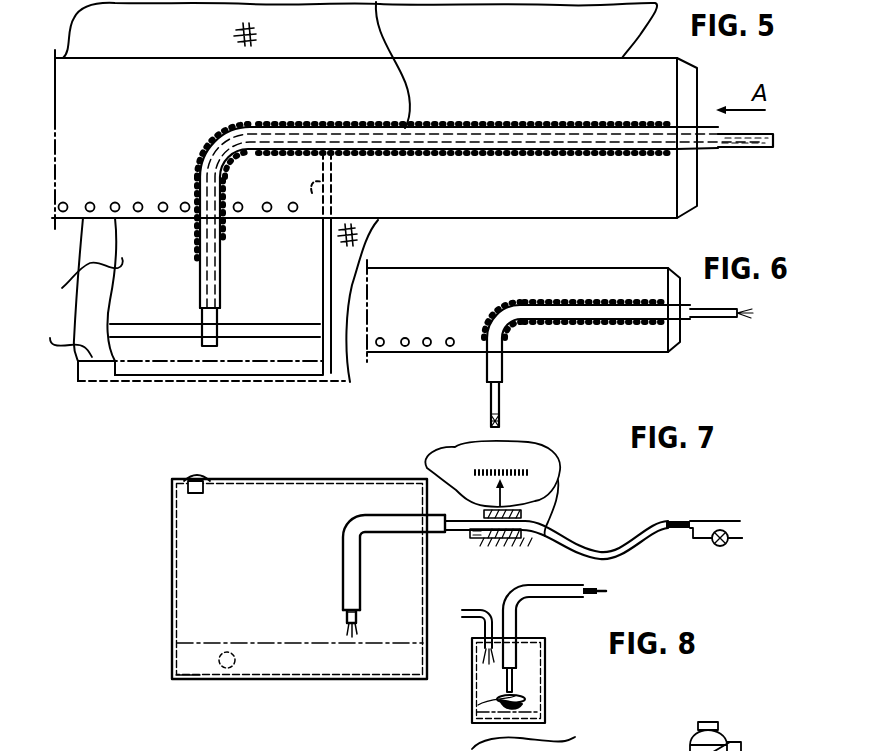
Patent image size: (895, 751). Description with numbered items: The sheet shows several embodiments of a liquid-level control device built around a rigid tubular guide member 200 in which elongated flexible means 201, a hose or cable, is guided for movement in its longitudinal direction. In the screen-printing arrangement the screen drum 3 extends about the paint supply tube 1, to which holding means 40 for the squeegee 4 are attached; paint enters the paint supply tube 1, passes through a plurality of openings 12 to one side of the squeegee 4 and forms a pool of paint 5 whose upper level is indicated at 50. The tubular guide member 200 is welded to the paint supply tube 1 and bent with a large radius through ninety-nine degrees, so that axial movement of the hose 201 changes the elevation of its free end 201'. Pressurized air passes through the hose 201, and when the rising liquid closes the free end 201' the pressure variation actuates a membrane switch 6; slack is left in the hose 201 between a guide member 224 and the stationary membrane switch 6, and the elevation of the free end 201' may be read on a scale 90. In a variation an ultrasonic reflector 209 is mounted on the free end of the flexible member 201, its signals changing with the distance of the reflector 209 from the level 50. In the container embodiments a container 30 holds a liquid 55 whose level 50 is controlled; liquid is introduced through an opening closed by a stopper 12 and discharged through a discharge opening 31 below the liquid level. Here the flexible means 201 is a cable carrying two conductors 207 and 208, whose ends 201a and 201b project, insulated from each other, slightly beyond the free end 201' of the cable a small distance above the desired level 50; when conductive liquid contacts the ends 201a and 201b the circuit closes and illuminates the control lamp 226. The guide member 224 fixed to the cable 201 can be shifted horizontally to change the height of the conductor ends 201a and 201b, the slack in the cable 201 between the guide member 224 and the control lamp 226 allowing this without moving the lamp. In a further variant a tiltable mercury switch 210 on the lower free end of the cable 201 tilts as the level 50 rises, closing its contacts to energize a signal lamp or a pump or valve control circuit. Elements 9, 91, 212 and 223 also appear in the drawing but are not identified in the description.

In FIG. 6, the paint supply tube 1 is at (557, 279).
In FIG. 5, the screen drum 3 is at (128, 381).
In FIG. 5, the squeegee 4 is at (160, 349).
In FIG. 5, the pool of paint 5 is at (88, 372).
In FIG. 8, the membrane switch 6 is at (593, 746).
In FIG. 7, the spray plume 9 is at (556, 463).
In FIG. 5, the openings 12 is at (63, 218).
In FIG. 6, the openings 12 is at (407, 346).
In FIG. 7, the container 30 is at (172, 583).
In FIG. 8, the container 30 is at (548, 649).
In FIG. 7, the discharge opening 31 is at (228, 680).
In FIG. 5, the holding means 40 is at (81, 284).
In FIG. 5, the liquid level 50 is at (180, 340).
In FIG. 7, the liquid level 50 is at (292, 646).
In FIG. 8, the liquid level 50 is at (528, 713).
In FIG. 7, the liquid 55 is at (185, 658).
In FIG. 8, the scale 90 is at (570, 750).
In FIG. 8, the support 91 is at (640, 746).
In FIG. 6, the tubular guide member 200 is at (622, 317).
In FIG. 7, the tubular guide member 200 is at (378, 519).
In FIG. 5, the elongated flexible means 201 is at (754, 162).
In FIG. 6, the elongated flexible means 201 is at (721, 345).
In FIG. 7, the elongated flexible means 201 is at (556, 526).
In FIG. 8, the elongated flexible means 201 is at (573, 611).
In FIG. 5, the free end of the flexible means 201' is at (485, 235).
In FIG. 7, the free end of the flexible means 201' is at (314, 606).
In FIG. 8, the free end of the flexible means 201' is at (472, 655).
In FIG. 7, the conductor end 201a is at (352, 627).
In FIG. 7, the conductor end 201b is at (352, 628).
In FIG. 7, the conductor 207 is at (694, 539).
In FIG. 7, the conductor 208 is at (688, 522).
In FIG. 6, the ultrasonic reflector 209 is at (502, 423).
In FIG. 8, the tiltable mercury switch 210 is at (508, 709).
In FIG. 7, the filler cap 212 is at (197, 475).
In FIG. 8, the bottle 223 is at (735, 741).
In FIG. 7, the guide member 224 is at (480, 541).
In FIG. 7, the control lamp 226 is at (727, 546).